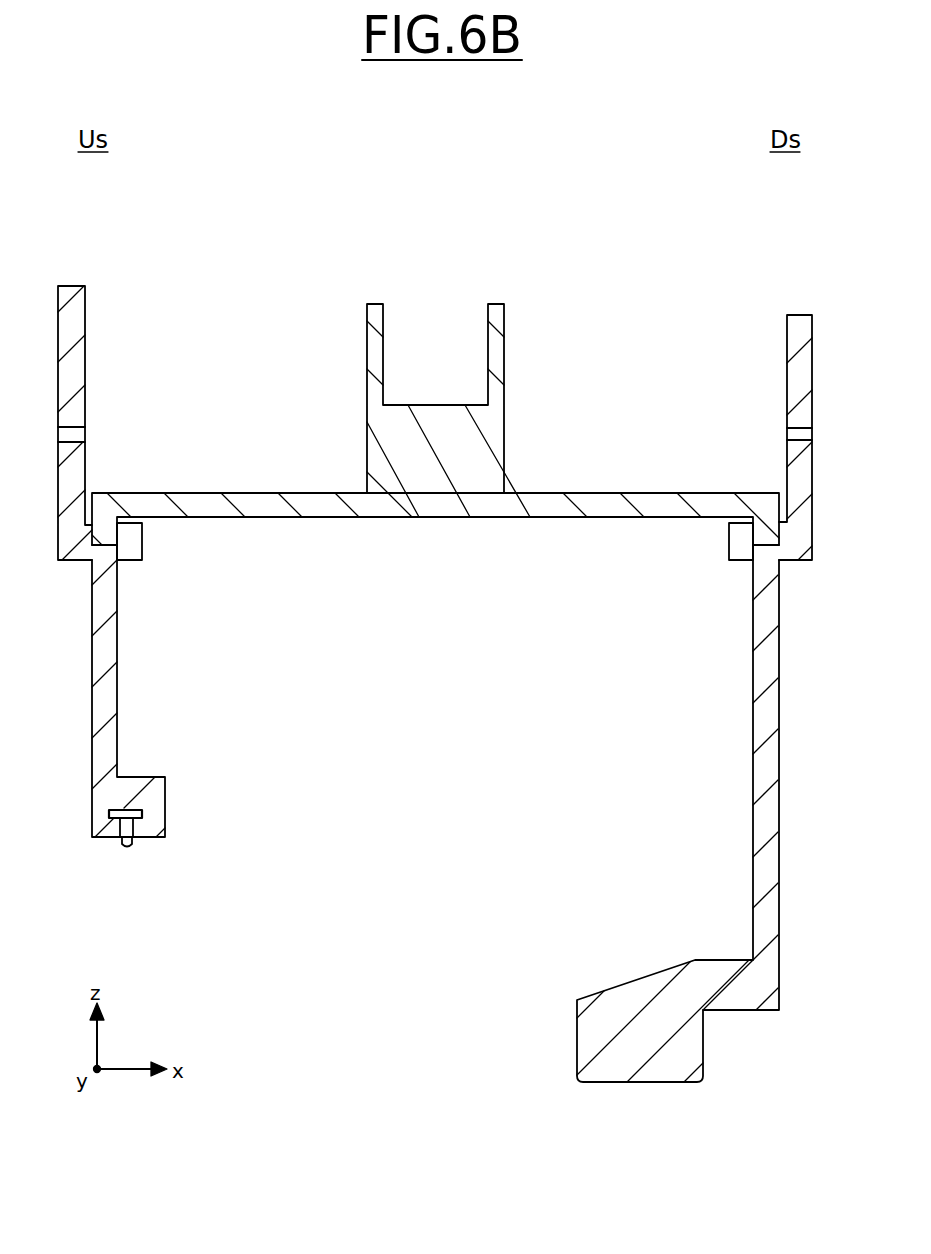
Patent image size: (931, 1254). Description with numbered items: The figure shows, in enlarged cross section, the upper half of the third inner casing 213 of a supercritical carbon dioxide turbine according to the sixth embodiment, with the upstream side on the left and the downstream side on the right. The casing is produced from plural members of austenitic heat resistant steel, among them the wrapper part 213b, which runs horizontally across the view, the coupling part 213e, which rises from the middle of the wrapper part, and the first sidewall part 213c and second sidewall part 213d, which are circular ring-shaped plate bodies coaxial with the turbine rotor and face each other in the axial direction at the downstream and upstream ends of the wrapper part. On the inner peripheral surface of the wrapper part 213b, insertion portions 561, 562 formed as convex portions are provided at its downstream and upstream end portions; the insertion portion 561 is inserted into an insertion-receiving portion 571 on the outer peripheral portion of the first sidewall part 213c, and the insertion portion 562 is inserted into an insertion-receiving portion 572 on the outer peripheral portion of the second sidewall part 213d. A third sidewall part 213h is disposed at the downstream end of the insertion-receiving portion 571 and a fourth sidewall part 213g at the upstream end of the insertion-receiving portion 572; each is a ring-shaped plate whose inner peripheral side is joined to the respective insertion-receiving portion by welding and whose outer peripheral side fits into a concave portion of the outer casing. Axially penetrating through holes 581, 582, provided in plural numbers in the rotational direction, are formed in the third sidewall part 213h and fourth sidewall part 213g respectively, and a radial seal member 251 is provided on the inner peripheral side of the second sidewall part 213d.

The third inner casing 213 is at (458, 193).
The wrapper part 213b is at (545, 505).
The first sidewall part 213c is at (765, 686).
The second sidewall part 213d is at (108, 652).
The coupling part 213e is at (487, 443).
The fourth sidewall part 213g is at (70, 357).
The third sidewall part 213h is at (797, 352).
The radial seal member 251 is at (143, 815).
The insertion portion 561 is at (760, 528).
The insertion portion 562 is at (110, 525).
The insertion-receiving portion 571 is at (750, 558).
The insertion-receiving portion 572 is at (113, 550).
The through hole 581 is at (795, 442).
The through hole 582 is at (77, 434).